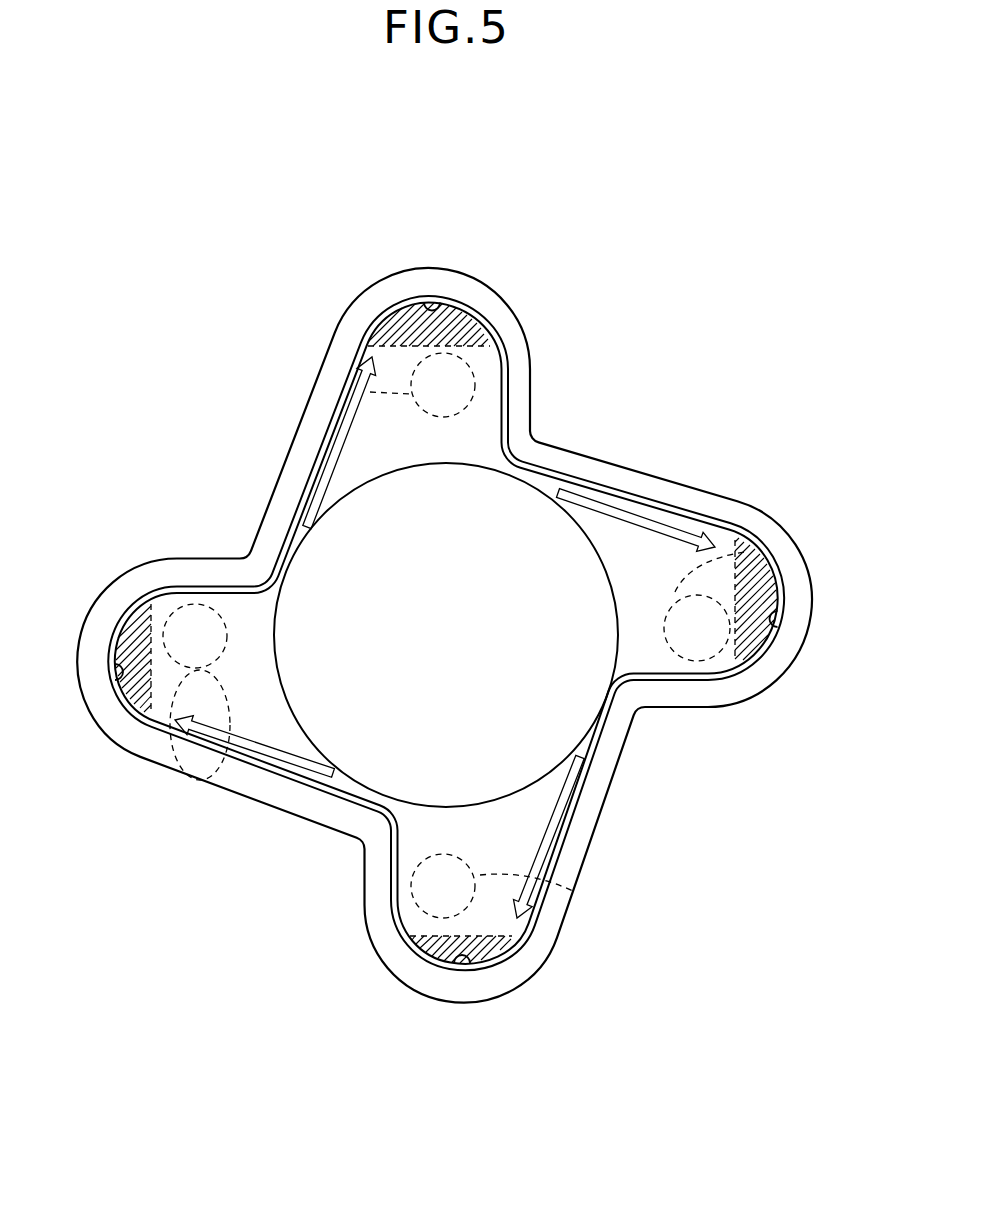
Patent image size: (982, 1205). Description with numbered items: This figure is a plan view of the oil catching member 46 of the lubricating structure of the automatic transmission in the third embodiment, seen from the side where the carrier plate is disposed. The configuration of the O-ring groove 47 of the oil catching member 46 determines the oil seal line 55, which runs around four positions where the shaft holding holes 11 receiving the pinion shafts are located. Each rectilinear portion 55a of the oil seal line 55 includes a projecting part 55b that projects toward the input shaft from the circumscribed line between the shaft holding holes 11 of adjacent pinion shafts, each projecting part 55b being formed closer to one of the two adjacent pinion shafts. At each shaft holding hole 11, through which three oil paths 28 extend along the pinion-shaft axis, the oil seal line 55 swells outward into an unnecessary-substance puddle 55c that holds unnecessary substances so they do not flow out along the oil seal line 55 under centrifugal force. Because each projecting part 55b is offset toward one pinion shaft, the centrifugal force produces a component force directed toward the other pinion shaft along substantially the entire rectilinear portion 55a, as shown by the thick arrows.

The shaft holding hole 11 is at (370, 392).
The oil path 28 is at (368, 316).
The oil catching member 46 is at (637, 442).
The O-ring groove 47 is at (718, 528).
The oil seal line 55 is at (726, 522).
The rectilinear portion 55a is at (312, 460).
The projecting part 55b is at (257, 549).
The unnecessary-substance puddle 55c is at (450, 303).